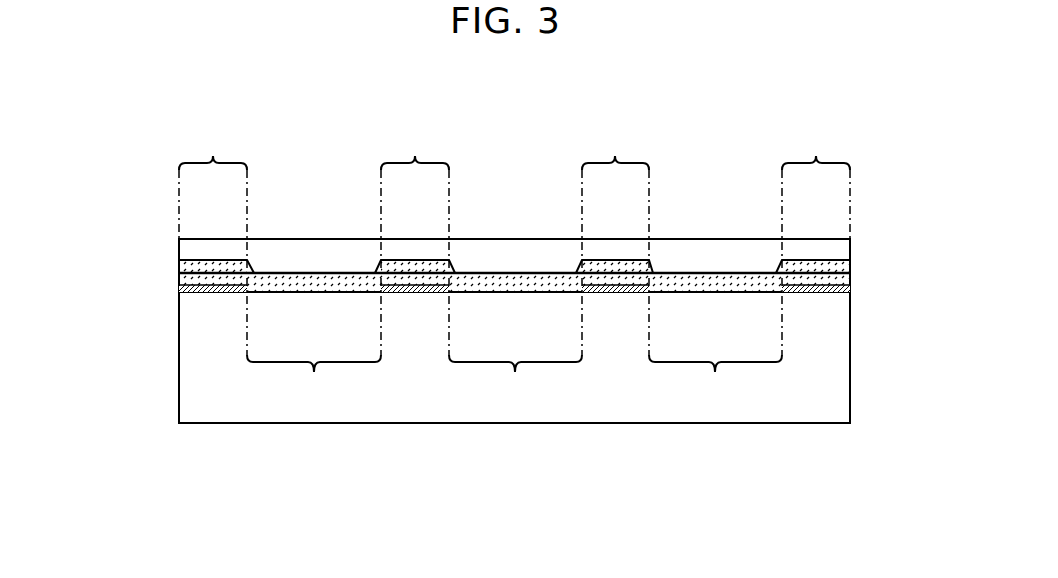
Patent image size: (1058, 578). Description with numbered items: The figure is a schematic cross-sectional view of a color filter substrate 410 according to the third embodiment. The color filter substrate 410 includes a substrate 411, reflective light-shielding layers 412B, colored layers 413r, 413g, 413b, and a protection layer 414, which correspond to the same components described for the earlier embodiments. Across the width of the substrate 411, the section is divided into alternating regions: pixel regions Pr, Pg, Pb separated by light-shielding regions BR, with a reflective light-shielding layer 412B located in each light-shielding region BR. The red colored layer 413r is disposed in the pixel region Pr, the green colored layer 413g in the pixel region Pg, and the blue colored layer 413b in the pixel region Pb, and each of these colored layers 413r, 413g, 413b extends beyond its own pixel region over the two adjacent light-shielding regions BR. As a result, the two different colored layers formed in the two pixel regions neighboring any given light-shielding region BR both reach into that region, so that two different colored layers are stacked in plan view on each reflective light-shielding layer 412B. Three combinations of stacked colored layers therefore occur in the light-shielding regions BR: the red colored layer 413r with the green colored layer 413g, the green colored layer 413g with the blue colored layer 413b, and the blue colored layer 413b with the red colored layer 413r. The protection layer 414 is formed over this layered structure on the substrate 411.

The color filter substrate 410 is at (547, 96).
The substrate 411 is at (455, 425).
The reflective light-shielding layer 412B is at (207, 293).
The red colored layer 413r is at (180, 283).
The green colored layer 413g is at (407, 263).
The blue colored layer 413b is at (178, 265).
The protection layer 414 is at (843, 251).
The light-shielding region BR is at (514, 240).
The red pixel region Pr is at (314, 380).
The green pixel region Pg is at (515, 380).
The blue pixel region Pb is at (715, 380).